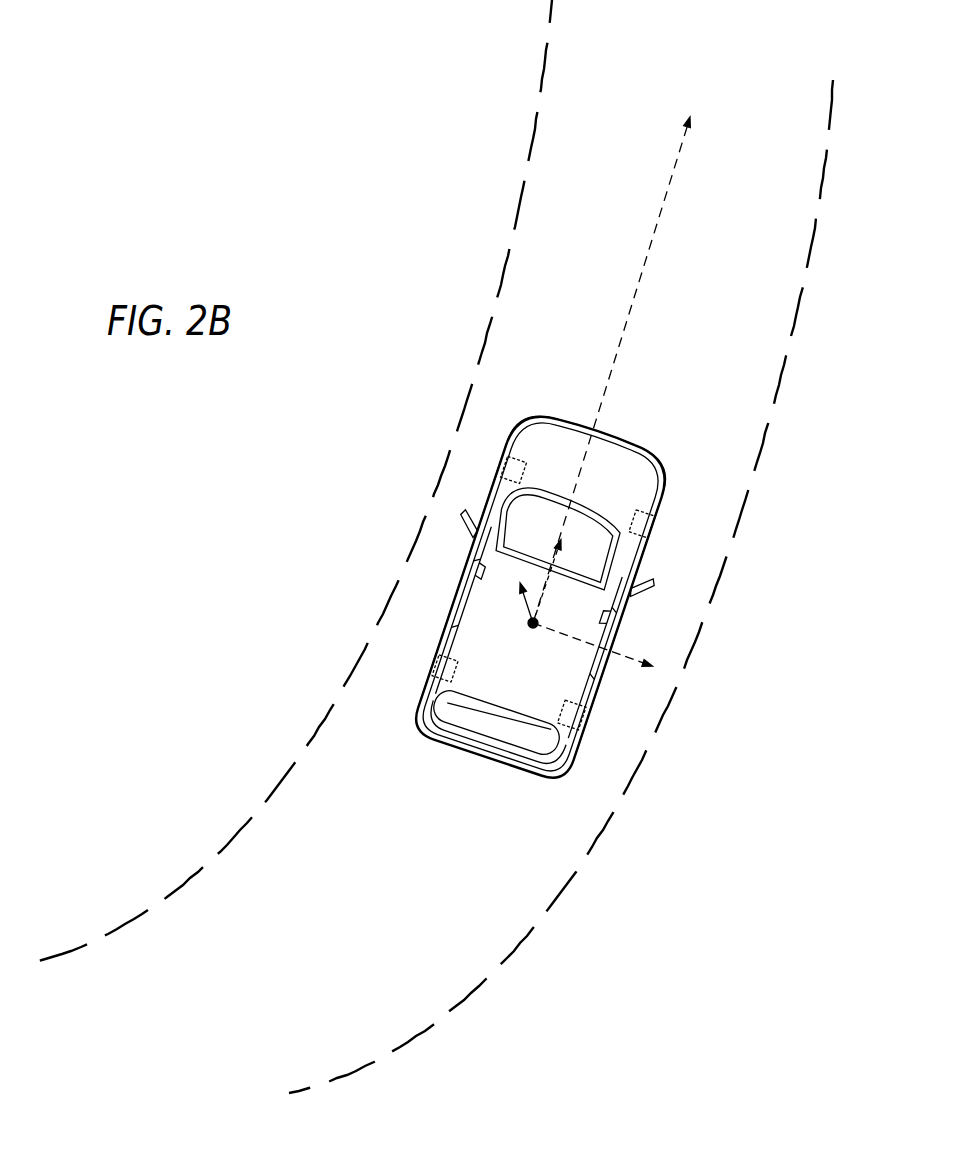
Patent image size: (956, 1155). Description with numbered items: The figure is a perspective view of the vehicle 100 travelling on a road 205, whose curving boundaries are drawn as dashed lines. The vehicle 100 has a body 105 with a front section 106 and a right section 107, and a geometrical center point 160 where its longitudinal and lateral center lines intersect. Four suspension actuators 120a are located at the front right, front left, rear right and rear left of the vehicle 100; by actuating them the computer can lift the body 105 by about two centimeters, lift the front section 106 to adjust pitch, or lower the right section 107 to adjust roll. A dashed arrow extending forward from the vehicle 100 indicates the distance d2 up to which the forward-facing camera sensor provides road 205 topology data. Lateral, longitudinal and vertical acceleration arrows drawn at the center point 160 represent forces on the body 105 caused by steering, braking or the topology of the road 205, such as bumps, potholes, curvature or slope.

The vehicle 100 is at (418, 578).
The body 105 is at (465, 545).
The front section 106 is at (551, 418).
The right section 107 is at (640, 609).
The suspension actuator 120a is at (503, 466).
The geometrical center point 160 is at (528, 623).
The road 205 is at (550, 230).
The distance d2 is at (611, 370).